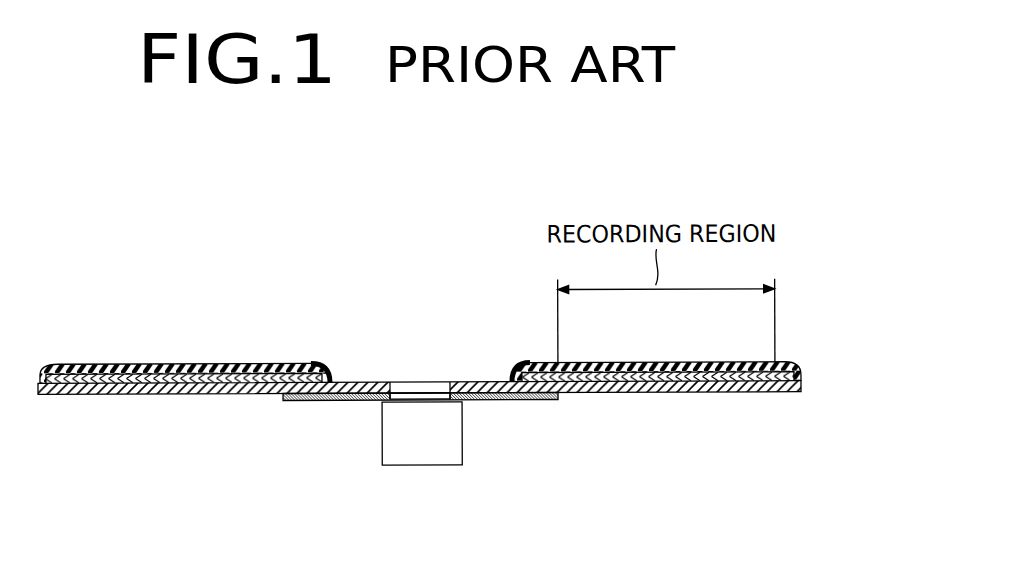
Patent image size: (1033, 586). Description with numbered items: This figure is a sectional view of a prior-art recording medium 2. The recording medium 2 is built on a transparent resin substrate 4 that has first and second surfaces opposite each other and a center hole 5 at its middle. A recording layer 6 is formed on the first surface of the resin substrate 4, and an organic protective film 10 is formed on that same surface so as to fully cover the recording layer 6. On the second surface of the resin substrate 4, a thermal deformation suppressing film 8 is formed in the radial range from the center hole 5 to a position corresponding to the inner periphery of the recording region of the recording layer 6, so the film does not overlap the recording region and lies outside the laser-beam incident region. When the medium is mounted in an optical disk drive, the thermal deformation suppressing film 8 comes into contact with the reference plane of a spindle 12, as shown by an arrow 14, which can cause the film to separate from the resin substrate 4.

The recording medium 2 is at (242, 351).
The resin substrate 4 is at (653, 394).
The center hole 5 is at (393, 381).
The recording layer 6 is at (127, 365).
The thermal deformation suppressing film 8 is at (301, 401).
The organic protective film 10 is at (170, 363).
The spindle 12 is at (421, 466).
The arrow 14 is at (452, 402).